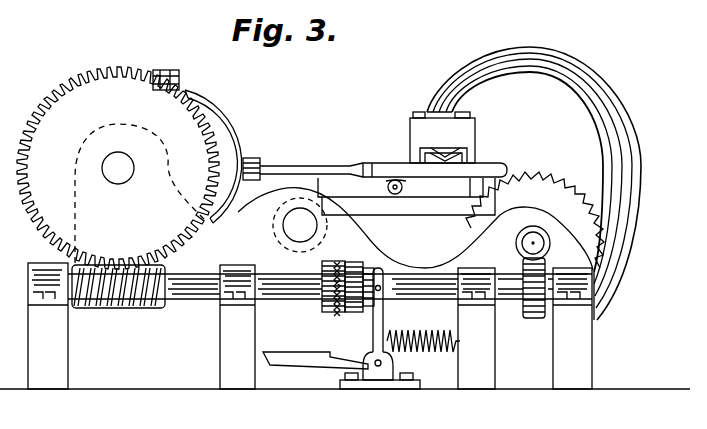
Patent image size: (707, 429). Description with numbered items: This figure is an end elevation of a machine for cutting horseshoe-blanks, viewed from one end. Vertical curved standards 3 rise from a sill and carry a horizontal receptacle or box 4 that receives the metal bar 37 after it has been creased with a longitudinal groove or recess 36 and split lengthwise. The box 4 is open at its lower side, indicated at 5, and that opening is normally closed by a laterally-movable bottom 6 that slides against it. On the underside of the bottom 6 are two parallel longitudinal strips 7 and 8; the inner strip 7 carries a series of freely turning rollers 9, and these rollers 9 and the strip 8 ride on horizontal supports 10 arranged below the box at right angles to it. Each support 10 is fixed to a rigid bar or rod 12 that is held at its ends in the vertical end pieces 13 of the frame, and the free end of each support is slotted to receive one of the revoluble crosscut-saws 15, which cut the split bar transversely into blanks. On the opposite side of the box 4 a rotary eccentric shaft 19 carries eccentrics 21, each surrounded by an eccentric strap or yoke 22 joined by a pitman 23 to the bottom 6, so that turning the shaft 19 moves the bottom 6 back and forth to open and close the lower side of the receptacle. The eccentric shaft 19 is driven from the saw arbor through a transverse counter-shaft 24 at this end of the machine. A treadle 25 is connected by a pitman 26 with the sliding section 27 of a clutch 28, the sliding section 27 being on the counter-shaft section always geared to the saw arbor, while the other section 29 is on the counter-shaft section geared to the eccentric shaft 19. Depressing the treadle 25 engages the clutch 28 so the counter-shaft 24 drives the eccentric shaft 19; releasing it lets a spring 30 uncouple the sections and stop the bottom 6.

The vertical curved standards 3 is at (534, 183).
The receptacle or box 4 is at (410, 133).
The open lower side 5 is at (478, 166).
The laterally-movable bottom 6 is at (413, 172).
The inner strip 7 is at (406, 182).
The outer strip 8 is at (470, 188).
The rollers 9 is at (388, 187).
The horizontal supports 10 is at (412, 209).
The rigid bar or rod 12 is at (300, 225).
The vertical end pieces 13 is at (334, 197).
The crosscut-saws 15 is at (535, 245).
The eccentric shaft 19 is at (118, 168).
The eccentrics 21 is at (215, 132).
The eccentric strap or yoke 22 is at (200, 100).
The pitman 23 is at (305, 172).
The counter-shaft 24 is at (195, 302).
The treadle 25 is at (325, 368).
The pitman 26 is at (372, 325).
The sliding section of clutch 27 is at (388, 306).
The clutch 28 is at (352, 312).
The other section of clutch 29 is at (322, 308).
The spring 30 is at (440, 350).
The longitudinal groove or recess 36 is at (441, 157).
The bar 37 is at (462, 158).